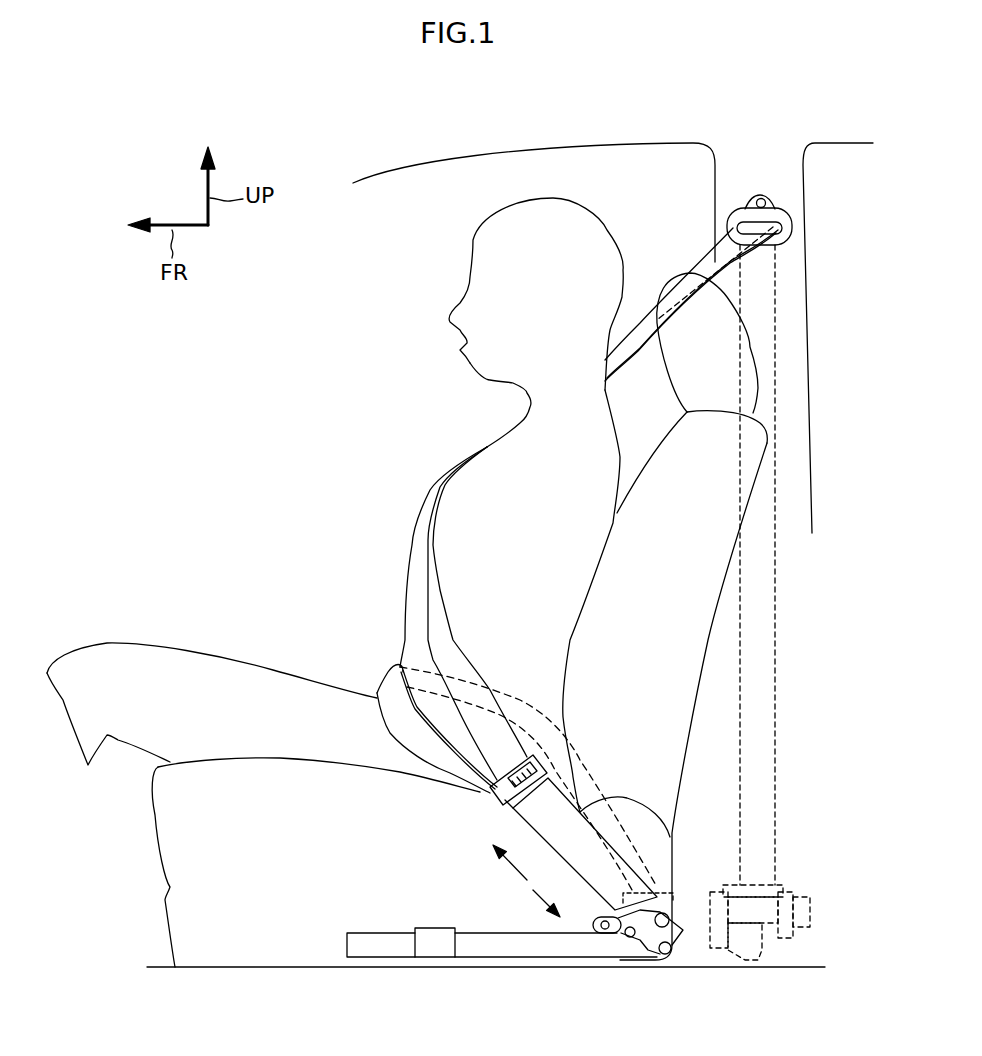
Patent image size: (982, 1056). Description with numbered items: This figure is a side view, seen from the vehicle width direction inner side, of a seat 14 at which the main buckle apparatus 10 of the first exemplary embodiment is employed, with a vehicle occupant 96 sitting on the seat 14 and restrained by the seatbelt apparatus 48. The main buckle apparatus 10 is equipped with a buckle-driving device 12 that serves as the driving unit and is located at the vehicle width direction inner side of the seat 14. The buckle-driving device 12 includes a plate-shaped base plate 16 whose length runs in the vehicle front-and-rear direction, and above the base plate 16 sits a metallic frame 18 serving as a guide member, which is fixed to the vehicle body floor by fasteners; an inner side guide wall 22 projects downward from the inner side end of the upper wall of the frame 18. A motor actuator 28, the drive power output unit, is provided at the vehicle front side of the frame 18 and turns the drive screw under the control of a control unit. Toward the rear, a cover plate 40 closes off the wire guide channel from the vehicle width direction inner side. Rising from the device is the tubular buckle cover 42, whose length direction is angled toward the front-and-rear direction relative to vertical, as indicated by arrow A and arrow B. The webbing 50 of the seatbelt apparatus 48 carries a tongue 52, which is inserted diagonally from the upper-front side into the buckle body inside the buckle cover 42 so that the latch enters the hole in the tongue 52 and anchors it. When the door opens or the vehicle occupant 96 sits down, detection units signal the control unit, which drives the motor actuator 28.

The main buckle apparatus 10 is at (422, 853).
The buckle-driving device 12 is at (437, 917).
The seat 14 is at (717, 648).
The base plate 16 is at (552, 958).
The frame 18 is at (520, 960).
The inner side guide wall 22 is at (490, 955).
The motor actuator 28 is at (280, 757).
The cover plate 40 is at (677, 935).
The buckle cover 42 is at (560, 805).
The seatbelt apparatus 48 is at (795, 762).
The webbing 50 is at (423, 497).
The tongue 52 is at (483, 803).
The vehicle occupant 96 is at (470, 480).
The arrow A is at (512, 870).
The arrow B is at (533, 904).